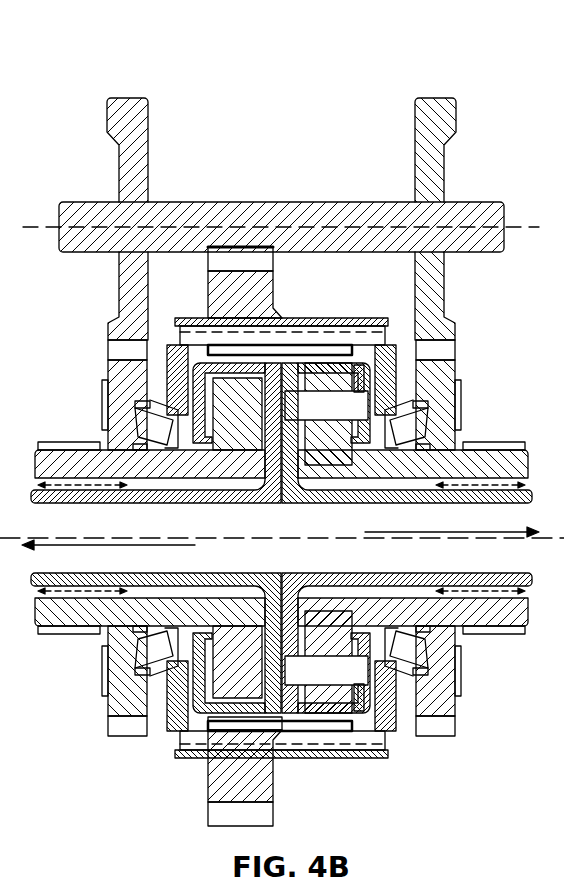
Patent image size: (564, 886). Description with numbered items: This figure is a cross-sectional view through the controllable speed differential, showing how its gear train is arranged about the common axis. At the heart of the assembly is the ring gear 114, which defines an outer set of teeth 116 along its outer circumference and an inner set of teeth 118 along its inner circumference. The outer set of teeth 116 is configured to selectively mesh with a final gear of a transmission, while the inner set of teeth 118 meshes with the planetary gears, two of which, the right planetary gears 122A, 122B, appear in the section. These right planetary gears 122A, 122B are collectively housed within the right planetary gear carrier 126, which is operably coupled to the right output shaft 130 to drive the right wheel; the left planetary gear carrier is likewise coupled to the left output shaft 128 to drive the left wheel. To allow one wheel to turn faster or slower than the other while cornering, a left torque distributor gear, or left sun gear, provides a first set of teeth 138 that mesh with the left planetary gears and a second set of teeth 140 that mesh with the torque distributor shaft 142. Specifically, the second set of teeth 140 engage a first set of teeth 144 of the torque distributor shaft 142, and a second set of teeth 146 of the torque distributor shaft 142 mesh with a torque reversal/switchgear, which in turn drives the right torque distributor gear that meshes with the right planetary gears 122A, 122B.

The ring gear 114 is at (265, 292).
The outer set of teeth 116 is at (222, 815).
The inner set of teeth 118 is at (282, 727).
The right planetary gear 122A is at (337, 380).
The right planetary gear 122B is at (320, 712).
The right planetary gear carrier 126 is at (294, 452).
The left output shaft 128 is at (83, 498).
The right output shaft 130 is at (474, 500).
The first set of teeth 138 is at (227, 438).
The second set of teeth 140 is at (122, 355).
The torque distributor shaft 142 is at (323, 202).
The first set of teeth 144 is at (125, 98).
The second set of teeth 146 is at (440, 110).